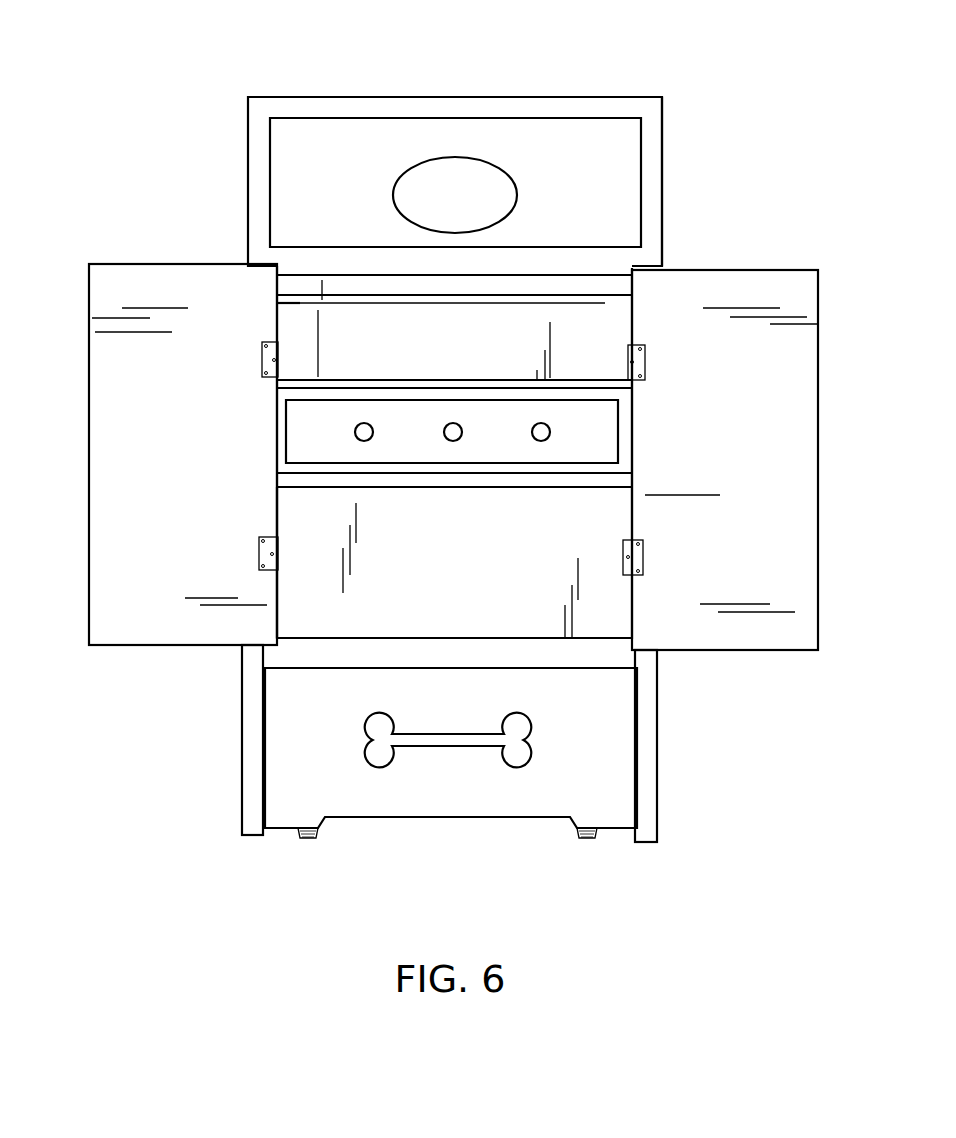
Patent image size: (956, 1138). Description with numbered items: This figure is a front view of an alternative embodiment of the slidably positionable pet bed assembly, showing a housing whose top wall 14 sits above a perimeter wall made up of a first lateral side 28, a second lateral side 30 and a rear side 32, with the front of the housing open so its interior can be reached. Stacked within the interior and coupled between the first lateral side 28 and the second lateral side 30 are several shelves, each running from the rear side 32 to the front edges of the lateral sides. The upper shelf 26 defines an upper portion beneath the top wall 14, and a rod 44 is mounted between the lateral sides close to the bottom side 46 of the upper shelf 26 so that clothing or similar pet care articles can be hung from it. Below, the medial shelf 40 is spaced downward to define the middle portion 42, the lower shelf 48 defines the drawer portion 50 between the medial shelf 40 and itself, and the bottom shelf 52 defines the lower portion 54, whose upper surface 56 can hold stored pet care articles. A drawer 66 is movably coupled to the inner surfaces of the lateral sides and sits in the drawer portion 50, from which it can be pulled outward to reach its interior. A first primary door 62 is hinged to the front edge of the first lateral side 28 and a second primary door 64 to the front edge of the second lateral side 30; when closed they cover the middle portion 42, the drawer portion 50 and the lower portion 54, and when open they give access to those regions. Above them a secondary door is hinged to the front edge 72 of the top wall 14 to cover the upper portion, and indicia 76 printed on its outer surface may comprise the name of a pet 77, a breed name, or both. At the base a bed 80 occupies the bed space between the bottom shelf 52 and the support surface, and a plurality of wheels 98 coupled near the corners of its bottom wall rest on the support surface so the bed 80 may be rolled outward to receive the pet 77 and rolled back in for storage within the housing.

The top wall 14 is at (377, 95).
The upper shelf 26 is at (283, 264).
The first lateral side 28 is at (248, 128).
The second lateral side 30 is at (663, 165).
The rear side 32 is at (308, 628).
The medial shelf 40 is at (593, 387).
The middle portion 42 is at (328, 338).
The rod 44 is at (300, 305).
The bottom side 46 is at (545, 277).
The lower shelf 48 is at (505, 487).
The drawer portion 50 is at (303, 420).
The bottom shelf 52 is at (620, 662).
The lower portion 54 is at (372, 607).
The upper surface 56 is at (532, 637).
The first primary door 62 is at (89, 300).
The second primary door 64 is at (818, 385).
The drawer 66 is at (597, 437).
The front edge 72 is at (310, 108).
The indicia 76 is at (492, 160).
The pet 77 is at (463, 188).
The bed 80 is at (607, 766).
The wheels 98 is at (306, 840).